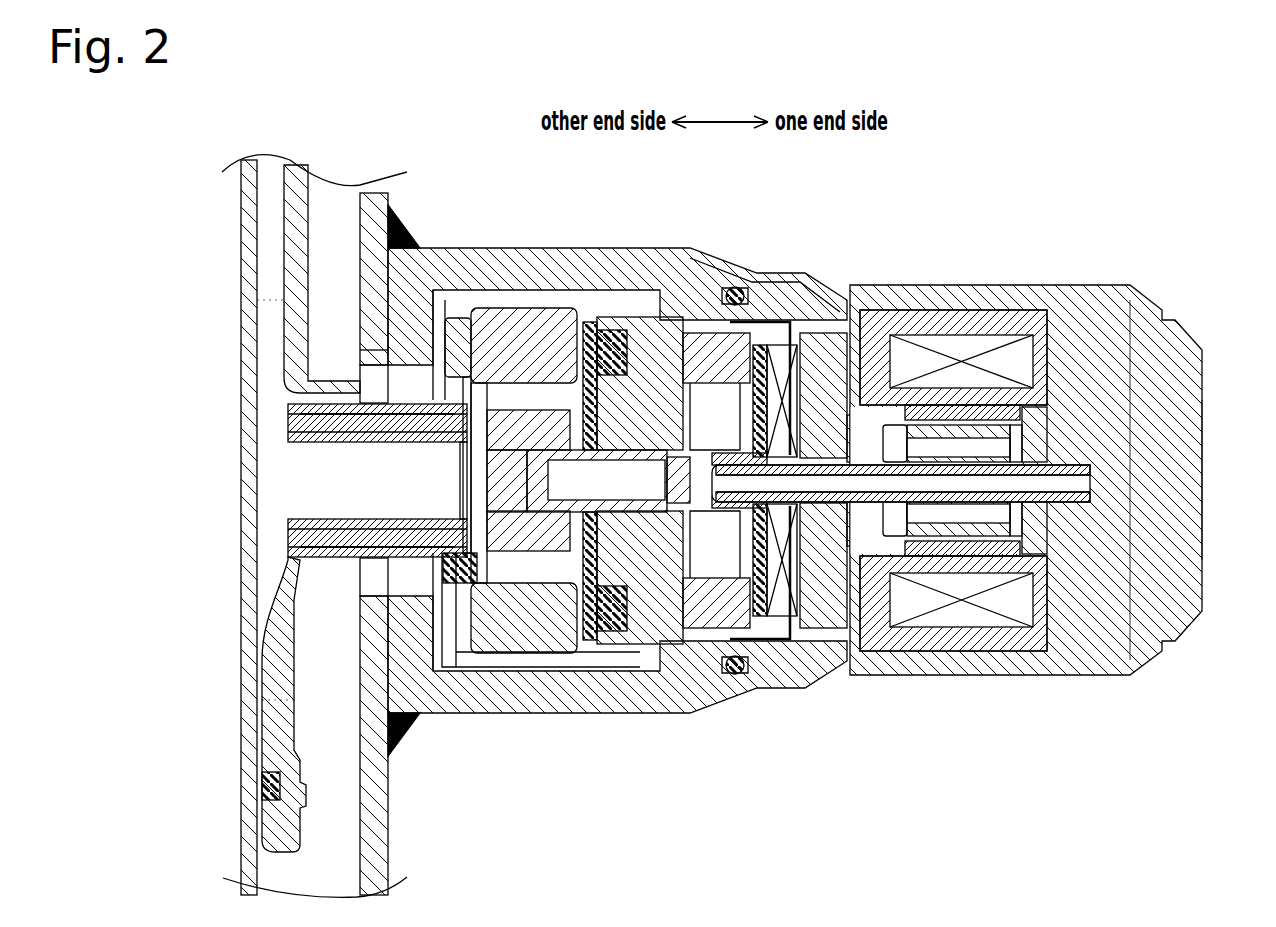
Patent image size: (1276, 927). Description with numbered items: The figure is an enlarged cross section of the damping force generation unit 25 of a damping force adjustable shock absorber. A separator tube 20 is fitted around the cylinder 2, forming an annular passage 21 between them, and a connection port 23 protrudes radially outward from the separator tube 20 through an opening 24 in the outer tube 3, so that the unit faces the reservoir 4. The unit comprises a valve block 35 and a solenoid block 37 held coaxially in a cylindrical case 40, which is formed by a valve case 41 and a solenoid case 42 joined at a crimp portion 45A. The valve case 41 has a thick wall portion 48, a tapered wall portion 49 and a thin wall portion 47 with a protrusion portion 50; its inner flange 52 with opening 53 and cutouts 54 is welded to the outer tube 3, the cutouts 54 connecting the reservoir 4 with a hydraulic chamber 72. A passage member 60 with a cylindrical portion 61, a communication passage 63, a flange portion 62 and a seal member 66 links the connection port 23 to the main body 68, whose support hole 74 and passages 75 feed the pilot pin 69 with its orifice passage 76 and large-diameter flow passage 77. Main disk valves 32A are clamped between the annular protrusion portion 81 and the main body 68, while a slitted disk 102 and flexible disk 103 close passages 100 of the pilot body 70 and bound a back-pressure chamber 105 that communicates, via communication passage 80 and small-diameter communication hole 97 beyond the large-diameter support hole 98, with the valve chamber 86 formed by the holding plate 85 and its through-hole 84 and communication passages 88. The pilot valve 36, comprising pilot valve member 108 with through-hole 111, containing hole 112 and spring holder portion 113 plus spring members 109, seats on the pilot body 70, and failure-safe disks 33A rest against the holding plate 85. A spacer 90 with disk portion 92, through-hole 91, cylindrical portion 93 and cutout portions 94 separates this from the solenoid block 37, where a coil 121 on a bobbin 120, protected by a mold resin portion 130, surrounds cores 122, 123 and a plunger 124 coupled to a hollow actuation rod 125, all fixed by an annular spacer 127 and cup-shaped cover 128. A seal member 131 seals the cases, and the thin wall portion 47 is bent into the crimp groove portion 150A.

The cylinder 2 is at (250, 276).
The outer tube 3 is at (373, 215).
The reservoir 4 is at (300, 825).
The separator tube 20 is at (292, 215).
The annular passage 21 is at (266, 345).
The connection port 23 is at (285, 620).
The opening 24 is at (280, 690).
The damping force generation unit 25 is at (1112, 215).
The main disk valve 32A is at (640, 700).
The failure-safe disk 33A is at (745, 270).
The valve block 35 is at (495, 248).
The pilot valve 36 is at (737, 286).
The solenoid block 37 is at (990, 325).
The case 40 is at (1115, 285).
The valve case 41 is at (590, 300).
The solenoid case 42 is at (962, 335).
The crimp portion 45A is at (830, 680).
The thin wall portion 47 is at (762, 505).
The thick wall portion 48 is at (420, 690).
The tapered wall portion 49 is at (735, 505).
The protrusion portion 50 is at (820, 560).
The inner flange 52 is at (404, 700).
The opening 53 is at (358, 365).
The cutout 54 is at (412, 365).
The passage member 60 is at (290, 556).
The cylindrical portion 61 is at (293, 430).
The flange portion 62 is at (434, 365).
The communication passage 63 is at (317, 517).
The seal member 66 is at (335, 440).
The main body 68 is at (520, 600).
The pilot pin 69 is at (640, 320).
The pilot body 70 is at (640, 600).
The hydraulic chamber 72 is at (478, 620).
The support hole 74 is at (462, 330).
The passage 75 is at (522, 340).
The orifice passage 76 is at (458, 600).
The large-diameter flow passage 77 is at (500, 580).
The communication passage 80 is at (600, 515).
The annular protrusion portion 81 is at (588, 340).
The through-hole 84 is at (830, 345).
The holding plate 85 is at (790, 600).
The valve chamber 86 is at (690, 650).
The communication passage 88 is at (765, 360).
The spacer 90 is at (800, 610).
The through-hole 91 is at (880, 560).
The disk portion 92 is at (870, 560).
The cylindrical portion 93 is at (770, 600).
The cutout portion 94 is at (840, 560).
The small-diameter communication hole 97 is at (712, 360).
The large-diameter support hole 98 is at (698, 340).
The passage 100 is at (665, 330).
The slitted disk 102 is at (562, 515).
The flexible disk 103 is at (590, 560).
The back-pressure chamber 105 is at (612, 340).
The pilot valve member 108 is at (790, 330).
The spring member 109 is at (760, 330).
The through-hole 111 is at (650, 560).
The containing hole 112 is at (700, 610).
The spring holder portion 113 is at (790, 345).
The bobbin 120 is at (1060, 300).
The coil 121 is at (1030, 305).
The core 122 is at (1130, 400).
The core 123 is at (897, 425).
The plunger 124 is at (975, 560).
The actuation rod 125 is at (1020, 570).
The annular spacer 127 is at (1085, 650).
The cup-shaped cover 128 is at (1205, 450).
The mold resin portion 130 is at (950, 620).
The seal member 131 is at (740, 690).
The crimp groove portion 150A is at (850, 680).